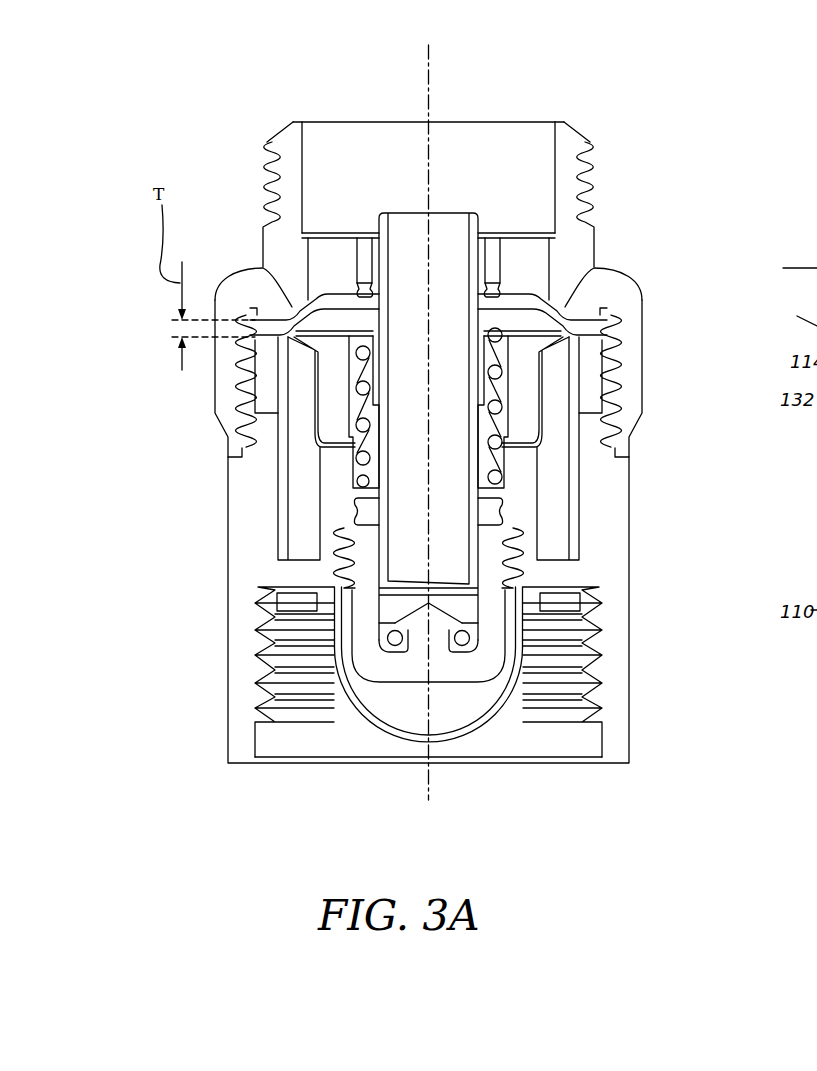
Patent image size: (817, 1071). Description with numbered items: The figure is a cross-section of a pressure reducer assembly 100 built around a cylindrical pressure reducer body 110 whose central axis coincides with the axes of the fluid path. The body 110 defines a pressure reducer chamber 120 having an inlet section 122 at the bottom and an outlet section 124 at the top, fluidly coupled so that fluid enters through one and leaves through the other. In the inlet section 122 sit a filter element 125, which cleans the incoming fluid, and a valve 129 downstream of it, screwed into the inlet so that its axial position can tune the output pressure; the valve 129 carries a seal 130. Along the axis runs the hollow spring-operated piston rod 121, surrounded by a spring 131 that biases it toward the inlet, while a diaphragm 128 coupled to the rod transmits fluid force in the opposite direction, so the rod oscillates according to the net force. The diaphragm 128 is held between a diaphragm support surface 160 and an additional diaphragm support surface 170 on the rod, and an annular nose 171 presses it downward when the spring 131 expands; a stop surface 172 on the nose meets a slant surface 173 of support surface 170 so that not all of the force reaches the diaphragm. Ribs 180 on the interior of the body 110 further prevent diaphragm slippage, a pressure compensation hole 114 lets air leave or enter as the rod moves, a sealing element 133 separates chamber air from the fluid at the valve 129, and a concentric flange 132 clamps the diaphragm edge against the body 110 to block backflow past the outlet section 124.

The pressure reducer assembly 100 is at (607, 82).
The pressure reducer body 110 is at (215, 613).
The pressure compensation hole 114 is at (256, 398).
The pressure reducer chamber 120 is at (518, 387).
The piston rod 121 is at (350, 567).
The inlet section 122 is at (448, 751).
The outlet section 124 is at (534, 251).
The filter element 125 is at (410, 737).
The diaphragm 128 is at (263, 268).
The valve 129 is at (371, 662).
The seal 130 is at (397, 650).
The spring 131 is at (508, 484).
The flange 132 is at (216, 400).
The sealing element 133 is at (354, 510).
The diaphragm support surface 160 is at (562, 300).
The additional diaphragm support surface 170 is at (549, 278).
The annular nose 171 is at (368, 257).
The stop surface 172 is at (356, 283).
The slant surface 173 is at (362, 288).
The ribs 180 is at (568, 355).